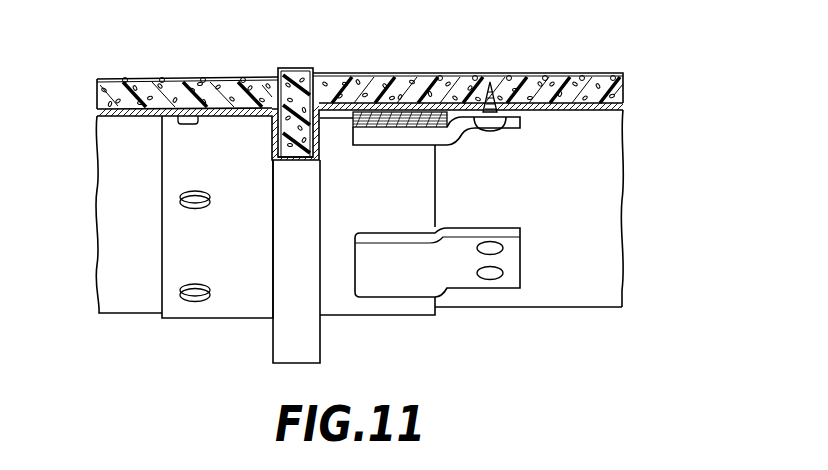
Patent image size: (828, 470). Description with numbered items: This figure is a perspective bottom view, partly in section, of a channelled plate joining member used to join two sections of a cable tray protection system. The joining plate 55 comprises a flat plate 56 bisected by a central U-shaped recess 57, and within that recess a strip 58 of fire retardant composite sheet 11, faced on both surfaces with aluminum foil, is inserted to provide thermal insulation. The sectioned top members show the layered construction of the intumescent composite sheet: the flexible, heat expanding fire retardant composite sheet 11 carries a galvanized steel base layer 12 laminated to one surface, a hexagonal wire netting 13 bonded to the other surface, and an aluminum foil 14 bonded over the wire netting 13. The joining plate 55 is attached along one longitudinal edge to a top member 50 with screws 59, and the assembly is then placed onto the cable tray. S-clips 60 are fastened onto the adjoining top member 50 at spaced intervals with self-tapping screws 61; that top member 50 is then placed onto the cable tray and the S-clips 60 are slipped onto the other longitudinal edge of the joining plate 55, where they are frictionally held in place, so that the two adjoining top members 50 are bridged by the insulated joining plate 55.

The fire retardant composite sheet 11 is at (97, 95).
The galvanized steel base layer 12 is at (97, 114).
The hexagonal wire netting 13 is at (196, 79).
The aluminum foil 14 is at (105, 79).
The top member 50 is at (125, 72).
The joining plate 55 is at (241, 328).
The flat plate 56 is at (370, 312).
The central U-shaped recess 57 is at (325, 196).
The strip 58 is at (293, 68).
The screws 59 is at (205, 206).
The S-clips 60 is at (467, 237).
The self-tapping screws 61 is at (495, 128).